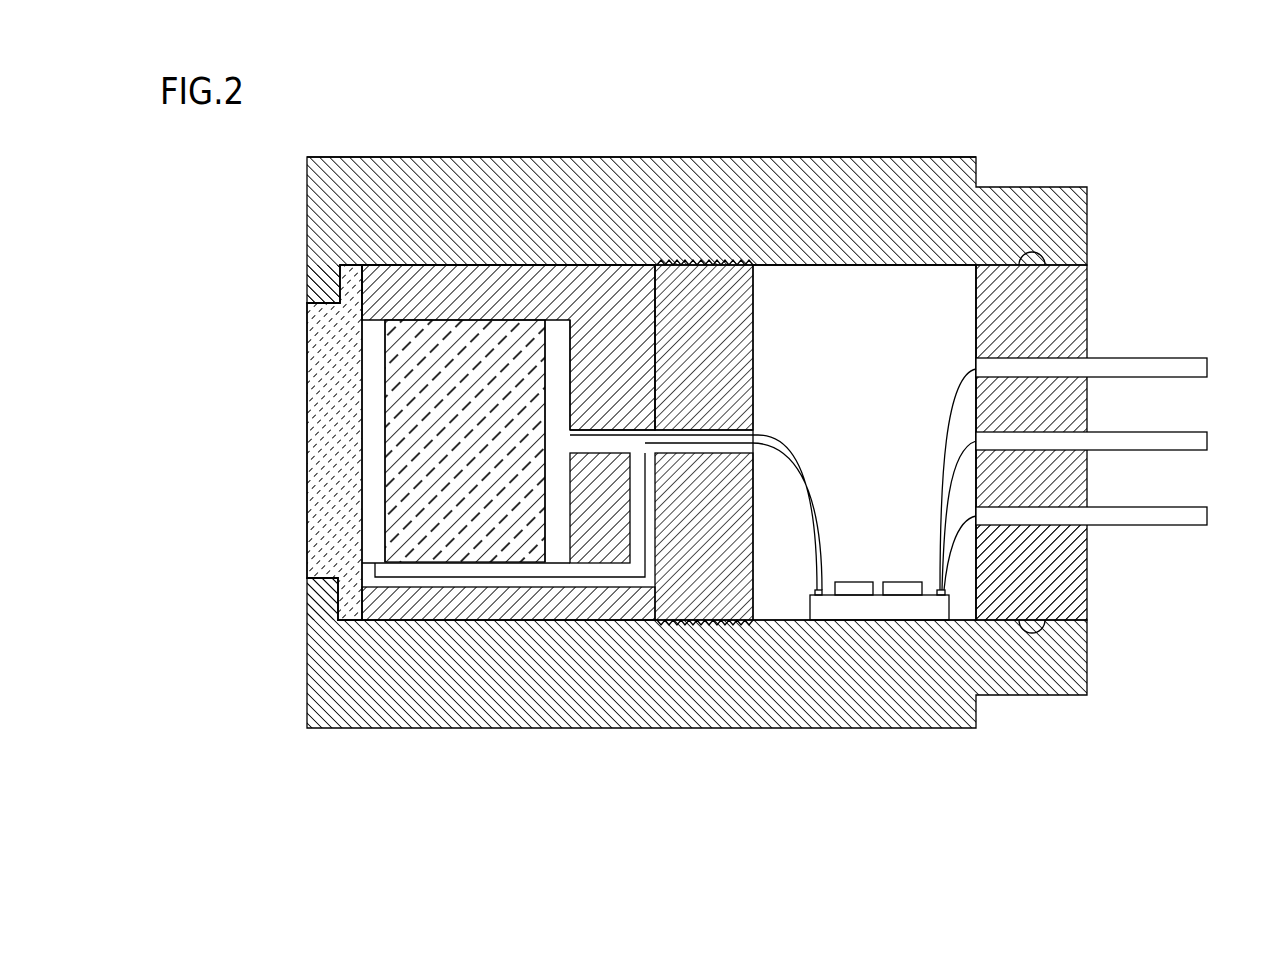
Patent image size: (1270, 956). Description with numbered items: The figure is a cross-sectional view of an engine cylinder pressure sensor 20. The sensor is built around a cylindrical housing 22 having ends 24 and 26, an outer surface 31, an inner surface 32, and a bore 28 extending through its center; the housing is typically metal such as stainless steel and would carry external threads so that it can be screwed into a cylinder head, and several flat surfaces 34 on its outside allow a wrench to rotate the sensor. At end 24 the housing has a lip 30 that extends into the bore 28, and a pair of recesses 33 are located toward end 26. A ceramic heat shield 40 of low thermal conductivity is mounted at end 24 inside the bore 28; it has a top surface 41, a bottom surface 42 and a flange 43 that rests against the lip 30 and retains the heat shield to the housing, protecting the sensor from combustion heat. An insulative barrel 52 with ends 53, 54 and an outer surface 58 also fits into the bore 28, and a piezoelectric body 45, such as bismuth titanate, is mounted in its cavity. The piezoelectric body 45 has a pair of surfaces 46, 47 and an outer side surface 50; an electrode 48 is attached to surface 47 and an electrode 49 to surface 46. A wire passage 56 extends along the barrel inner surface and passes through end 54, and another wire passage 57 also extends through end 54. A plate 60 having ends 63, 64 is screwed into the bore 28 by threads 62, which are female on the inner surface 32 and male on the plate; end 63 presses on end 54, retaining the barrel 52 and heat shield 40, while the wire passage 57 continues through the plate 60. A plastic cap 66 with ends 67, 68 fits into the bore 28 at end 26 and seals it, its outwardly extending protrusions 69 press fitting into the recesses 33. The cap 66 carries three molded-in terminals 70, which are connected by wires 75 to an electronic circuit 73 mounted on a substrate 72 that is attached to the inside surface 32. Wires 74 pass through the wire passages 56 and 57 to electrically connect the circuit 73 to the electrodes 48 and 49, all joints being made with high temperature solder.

The engine cylinder pressure sensor 20 is at (982, 93).
The cylindrical housing 22 is at (600, 156).
The end of housing 24 is at (307, 186).
The end of housing 26 is at (1087, 200).
The bore 28 is at (836, 288).
The lip 30 is at (307, 290).
The outer surface of housing 31 is at (322, 157).
The inner surface of housing 32 is at (915, 266).
The recesses 33 is at (1027, 633).
The flat surfaces 34 is at (1058, 695).
The ceramic heat shield 40 is at (307, 536).
The top surface of heat shield 41 is at (375, 620).
The bottom surface of heat shield 42 is at (307, 441).
The flange 43 is at (372, 597).
The piezoelectric body 45 is at (480, 430).
The surface of piezoelectric body 46 is at (555, 498).
The surface of piezoelectric body 47 is at (385, 362).
The electrode 48 is at (385, 448).
The electrode 49 is at (545, 390).
The outer side surface of piezoelectric body 50 is at (433, 312).
The insulative barrel 52 is at (533, 266).
The end of barrel 53 is at (370, 290).
The end of barrel 54 is at (653, 312).
The wire passage 56 is at (455, 572).
The wire passage 57 is at (620, 428).
The outer surface of barrel 58 is at (488, 265).
The plate 60 is at (695, 264).
The threads 62 is at (700, 620).
The end of plate 63 is at (660, 482).
The end of plate 64 is at (737, 380).
The cap 66 is at (1087, 310).
The end of cap 67 is at (976, 308).
The end of cap 68 is at (1087, 585).
The protrusions 69 is at (1027, 257).
The terminals 70 is at (1220, 517).
The substrate 72 is at (845, 602).
The electronic circuit 73 is at (878, 578).
The wires 74 is at (790, 454).
The wires 75 is at (928, 400).